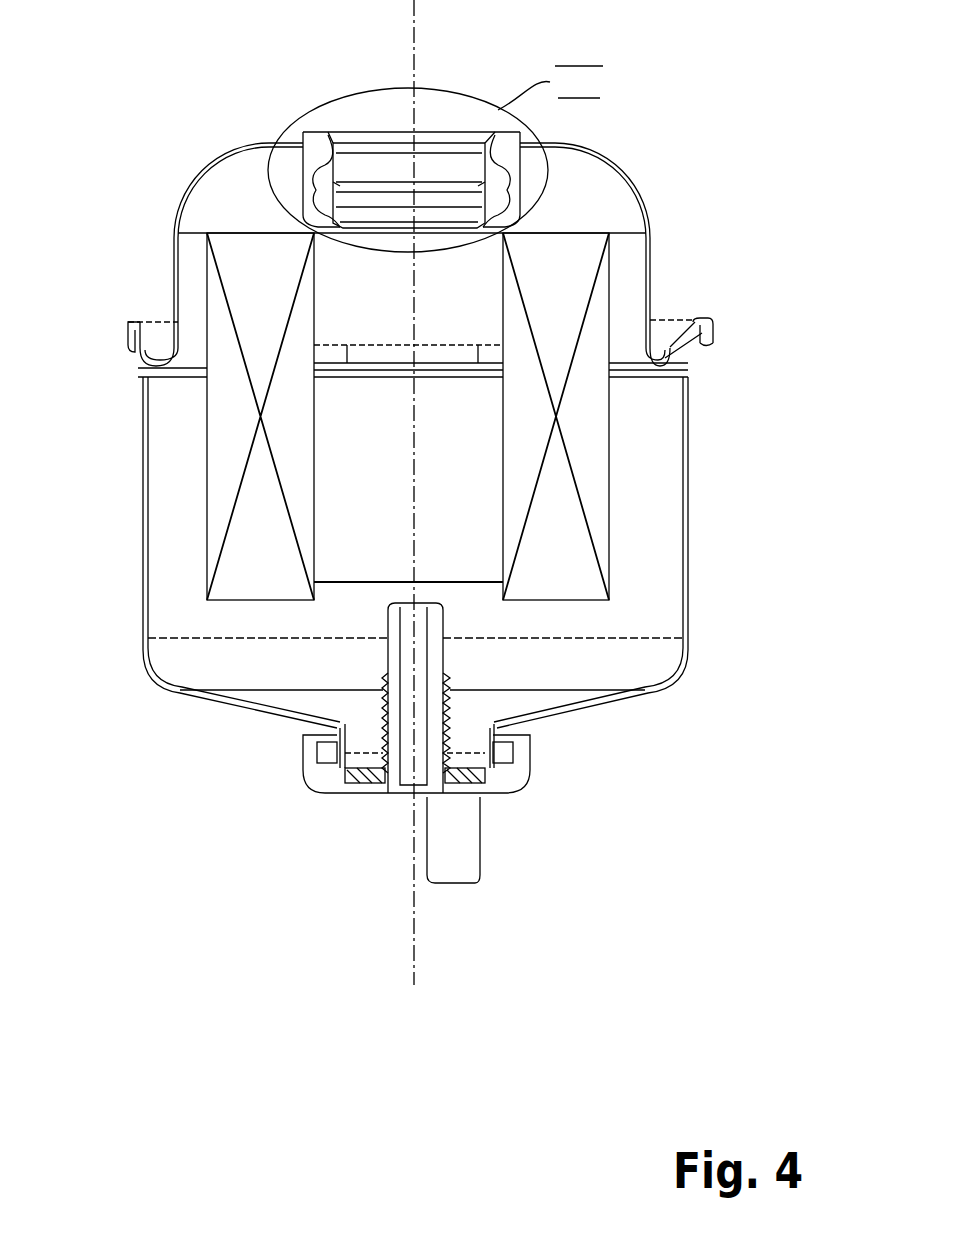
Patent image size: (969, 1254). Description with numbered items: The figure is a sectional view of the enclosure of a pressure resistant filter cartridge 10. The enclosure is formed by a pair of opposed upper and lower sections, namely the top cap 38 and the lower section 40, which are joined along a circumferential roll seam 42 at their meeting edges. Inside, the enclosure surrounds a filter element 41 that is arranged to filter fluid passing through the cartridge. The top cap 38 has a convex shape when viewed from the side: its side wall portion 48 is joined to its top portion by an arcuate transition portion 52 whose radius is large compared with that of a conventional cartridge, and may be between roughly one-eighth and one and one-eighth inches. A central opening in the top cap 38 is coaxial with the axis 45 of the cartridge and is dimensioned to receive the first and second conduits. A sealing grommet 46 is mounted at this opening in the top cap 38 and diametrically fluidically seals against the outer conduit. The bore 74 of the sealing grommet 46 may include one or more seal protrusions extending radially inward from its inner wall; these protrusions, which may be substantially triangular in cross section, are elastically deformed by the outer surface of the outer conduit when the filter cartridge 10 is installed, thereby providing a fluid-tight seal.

The pressure resistant filter cartridge 10 is at (178, 72).
The top cap 38 is at (174, 258).
The lower section 40 is at (690, 508).
The filter element 41 is at (224, 457).
The circumferential roll seam 42 is at (128, 332).
The axis 45 is at (423, 947).
The sealing grommet 46 is at (538, 137).
The side wall portion 48 is at (653, 268).
The arcuate transition portion 52 is at (617, 155).
The bore 74 is at (362, 167).